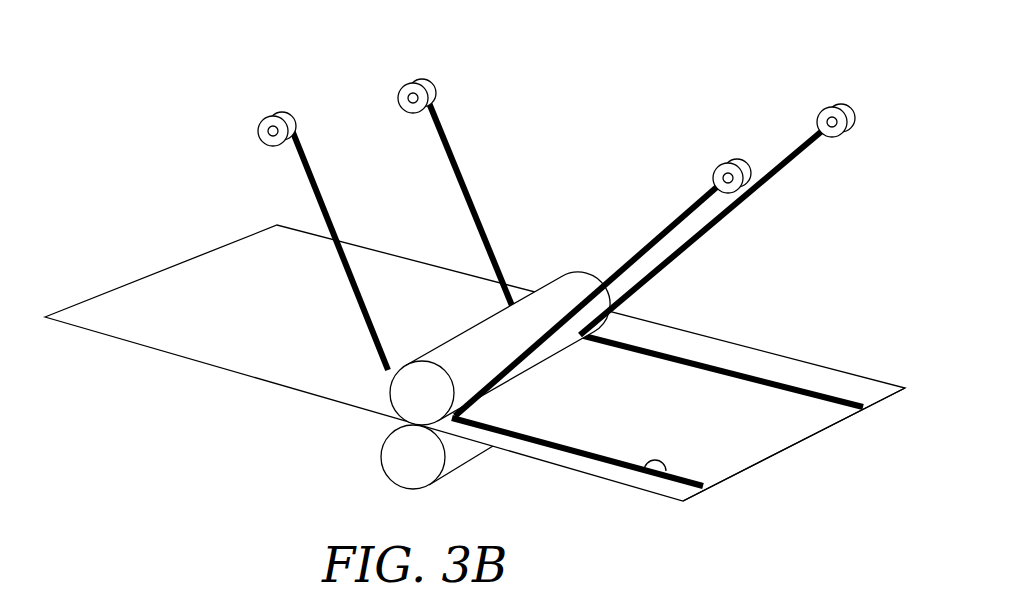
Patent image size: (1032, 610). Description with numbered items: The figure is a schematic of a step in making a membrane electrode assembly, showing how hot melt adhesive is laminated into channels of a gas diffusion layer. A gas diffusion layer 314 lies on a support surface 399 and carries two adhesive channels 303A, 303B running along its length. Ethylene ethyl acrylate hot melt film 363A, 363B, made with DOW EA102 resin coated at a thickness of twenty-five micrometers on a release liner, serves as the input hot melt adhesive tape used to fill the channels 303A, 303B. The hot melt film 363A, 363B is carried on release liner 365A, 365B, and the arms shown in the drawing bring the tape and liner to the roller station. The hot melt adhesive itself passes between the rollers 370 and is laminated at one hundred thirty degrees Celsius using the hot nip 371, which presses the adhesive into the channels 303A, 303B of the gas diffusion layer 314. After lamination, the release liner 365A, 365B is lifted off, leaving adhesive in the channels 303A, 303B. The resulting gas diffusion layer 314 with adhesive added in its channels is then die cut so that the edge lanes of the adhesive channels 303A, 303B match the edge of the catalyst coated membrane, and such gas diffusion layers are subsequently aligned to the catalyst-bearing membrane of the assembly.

The support surface 399 is at (148, 292).
The gas diffusion layer 314 is at (792, 450).
The channel 303A is at (633, 467).
The channel 303B is at (810, 390).
The ethylene ethyl acrylate hot melt film 363A is at (303, 175).
The ethylene ethyl acrylate hot melt film 363B is at (442, 130).
The release liner 365A is at (652, 242).
The release liner 365B is at (792, 148).
The rollers 370 is at (407, 393).
The hot nip 371 is at (555, 353).